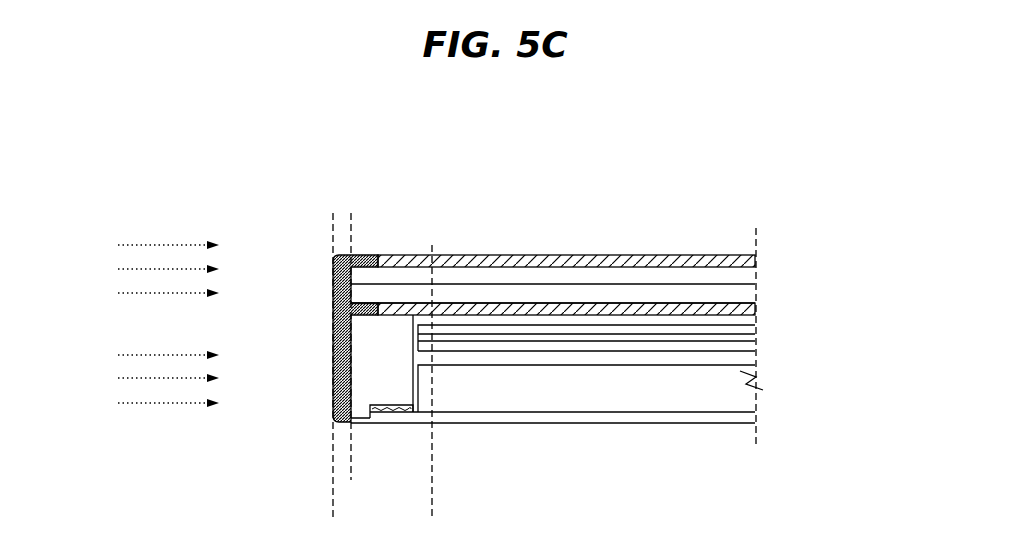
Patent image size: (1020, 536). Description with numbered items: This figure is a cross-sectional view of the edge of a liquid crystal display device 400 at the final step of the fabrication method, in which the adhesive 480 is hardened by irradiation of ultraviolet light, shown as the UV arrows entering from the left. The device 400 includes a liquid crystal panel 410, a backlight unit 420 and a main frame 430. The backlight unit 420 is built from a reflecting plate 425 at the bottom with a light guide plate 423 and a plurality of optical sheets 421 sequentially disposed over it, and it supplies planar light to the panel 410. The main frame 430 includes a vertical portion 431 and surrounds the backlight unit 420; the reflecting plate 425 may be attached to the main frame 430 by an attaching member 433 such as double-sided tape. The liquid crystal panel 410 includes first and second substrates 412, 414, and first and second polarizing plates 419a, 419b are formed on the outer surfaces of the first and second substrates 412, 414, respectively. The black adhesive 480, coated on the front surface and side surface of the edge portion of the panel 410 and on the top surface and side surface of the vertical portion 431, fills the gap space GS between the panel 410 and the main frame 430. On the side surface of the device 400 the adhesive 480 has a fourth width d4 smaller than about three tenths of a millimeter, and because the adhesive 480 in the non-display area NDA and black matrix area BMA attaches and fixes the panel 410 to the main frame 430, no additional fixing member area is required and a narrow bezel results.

The liquid crystal display device 400 is at (482, 139).
The liquid crystal panel 410 is at (572, 191).
The first substrate 412 is at (601, 297).
The second substrate 414 is at (556, 279).
The first polarizing plate 419a is at (709, 310).
The second polarizing plate 419b is at (660, 263).
The backlight unit 420 is at (635, 380).
The optical sheets 421 is at (757, 332).
The light guide plate 423 is at (745, 394).
The reflecting plate 425 is at (743, 420).
The main frame 430 is at (330, 331).
The vertical portion 431 is at (373, 365).
The attaching member 433 is at (383, 405).
The adhesive 480 is at (334, 290).
The fourth width d4 is at (320, 207).
The gap space GS is at (376, 296).
The black matrix area BMA is at (432, 473).
The non-display area NDA is at (432, 508).